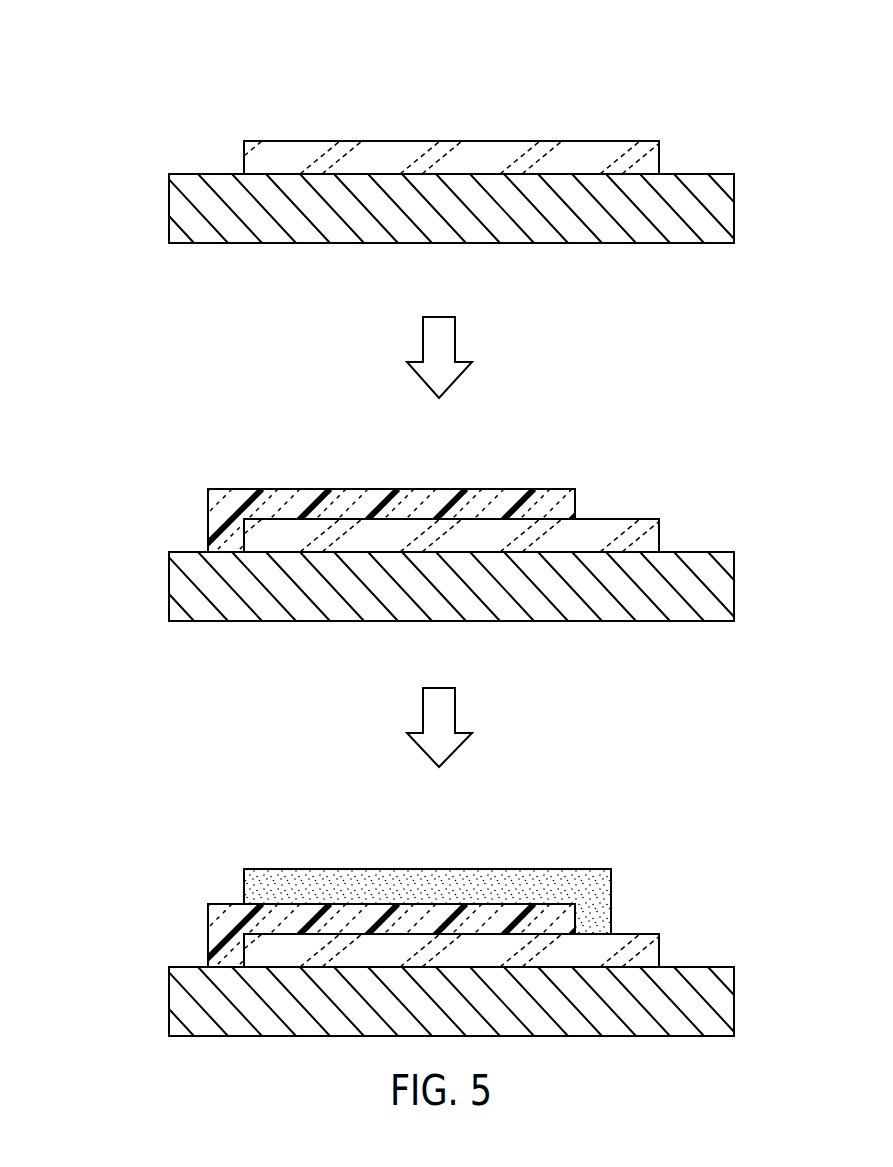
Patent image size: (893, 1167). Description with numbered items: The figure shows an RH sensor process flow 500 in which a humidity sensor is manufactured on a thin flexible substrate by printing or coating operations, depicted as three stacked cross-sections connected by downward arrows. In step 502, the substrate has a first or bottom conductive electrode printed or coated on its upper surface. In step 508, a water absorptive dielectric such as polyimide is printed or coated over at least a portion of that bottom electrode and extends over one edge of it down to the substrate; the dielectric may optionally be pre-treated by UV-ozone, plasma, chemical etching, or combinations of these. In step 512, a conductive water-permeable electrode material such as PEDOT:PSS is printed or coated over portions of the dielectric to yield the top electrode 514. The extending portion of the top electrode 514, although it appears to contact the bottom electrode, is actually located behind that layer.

The RH sensor process flow 500 is at (113, 105).
The step 502 is at (97, 204).
The step 508 is at (99, 577).
The step 512 is at (99, 1005).
The top electrode 514 is at (280, 878).